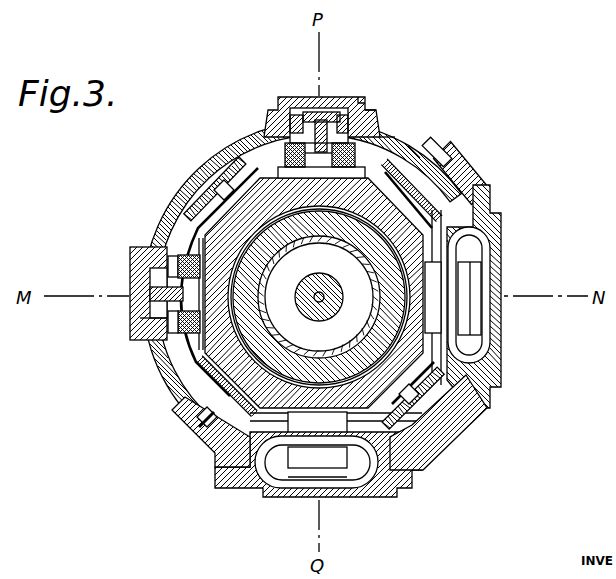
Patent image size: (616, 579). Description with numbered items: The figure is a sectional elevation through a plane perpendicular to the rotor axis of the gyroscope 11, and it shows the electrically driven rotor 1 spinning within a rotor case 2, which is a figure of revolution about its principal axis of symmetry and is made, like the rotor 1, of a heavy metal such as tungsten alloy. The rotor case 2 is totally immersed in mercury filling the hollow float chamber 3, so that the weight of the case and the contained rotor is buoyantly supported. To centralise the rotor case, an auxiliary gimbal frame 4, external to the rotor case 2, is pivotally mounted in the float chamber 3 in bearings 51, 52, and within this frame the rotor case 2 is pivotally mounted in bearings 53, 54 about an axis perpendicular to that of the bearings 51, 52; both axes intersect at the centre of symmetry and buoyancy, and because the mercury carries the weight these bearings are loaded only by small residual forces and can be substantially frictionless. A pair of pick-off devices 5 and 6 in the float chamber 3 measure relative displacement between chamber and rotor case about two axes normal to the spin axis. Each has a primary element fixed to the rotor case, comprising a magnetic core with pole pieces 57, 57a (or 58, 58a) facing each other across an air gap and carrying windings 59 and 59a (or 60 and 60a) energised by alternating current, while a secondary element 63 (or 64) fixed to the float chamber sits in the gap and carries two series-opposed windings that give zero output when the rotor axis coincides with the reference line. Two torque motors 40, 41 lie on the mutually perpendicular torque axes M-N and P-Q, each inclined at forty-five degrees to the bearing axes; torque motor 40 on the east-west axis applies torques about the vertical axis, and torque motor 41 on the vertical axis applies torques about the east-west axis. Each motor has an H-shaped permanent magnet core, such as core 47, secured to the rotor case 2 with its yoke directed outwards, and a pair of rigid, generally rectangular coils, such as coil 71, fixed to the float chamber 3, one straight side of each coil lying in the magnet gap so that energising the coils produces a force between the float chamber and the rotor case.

The rotor 1 is at (266, 293).
The rotor case 2 is at (302, 272).
The float chamber 3 is at (419, 123).
The auxiliary gimbal frame 4 is at (459, 152).
The pick-off device 5 is at (319, 109).
The pick-off device 6 is at (127, 290).
The gyroscope 11 is at (495, 296).
The torque motor 40 is at (496, 295).
The torque motor 41 is at (316, 483).
The permanent magnet core 47 is at (500, 298).
The bearing 51 is at (480, 173).
The bearing 52 is at (193, 432).
The bearing 53 is at (187, 181).
The bearing 54 is at (434, 421).
The pole piece 57 is at (329, 116).
The pole piece 57a is at (402, 110).
The pole piece 58 is at (141, 334).
The pole piece 58a is at (139, 269).
The winding 59 is at (303, 107).
The winding 59a is at (453, 141).
The winding 60 is at (127, 351).
The winding 60a is at (132, 244).
The secondary element 63 is at (383, 87).
The secondary element 64 is at (130, 306).
The coil 71 is at (502, 295).